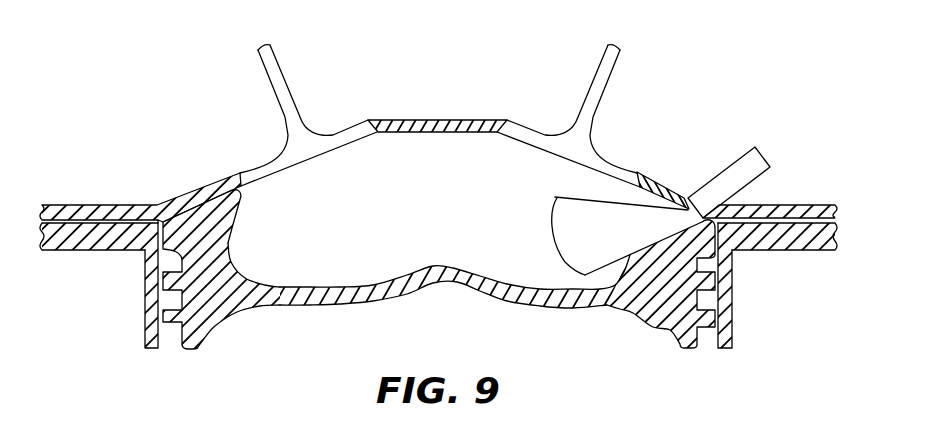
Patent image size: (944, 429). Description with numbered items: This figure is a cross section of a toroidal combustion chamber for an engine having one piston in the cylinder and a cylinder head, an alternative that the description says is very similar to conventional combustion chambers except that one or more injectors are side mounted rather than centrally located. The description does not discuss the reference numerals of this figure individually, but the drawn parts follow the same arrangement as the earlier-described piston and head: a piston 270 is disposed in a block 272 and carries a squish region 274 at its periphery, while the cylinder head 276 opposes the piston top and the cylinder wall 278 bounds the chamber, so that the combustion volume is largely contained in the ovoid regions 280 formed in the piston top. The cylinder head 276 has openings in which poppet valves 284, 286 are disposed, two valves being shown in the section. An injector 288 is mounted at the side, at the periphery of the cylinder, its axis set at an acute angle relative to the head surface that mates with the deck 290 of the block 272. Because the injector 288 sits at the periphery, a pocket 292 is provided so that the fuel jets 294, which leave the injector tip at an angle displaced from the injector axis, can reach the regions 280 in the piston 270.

The hull 270 is at (446, 297).
The frame 272 is at (472, 284).
The body member 274 is at (202, 229).
The skin panel / glazing 276 is at (113, 210).
The frame leg 278 is at (155, 337).
The interior space 280 is at (455, 226).
The left strut 284 is at (280, 73).
The right strut 286 is at (597, 73).
The pin 288 is at (745, 163).
The frame plate 290 is at (100, 247).
The glazing bead 292 is at (675, 230).
The cavity 294 is at (608, 242).